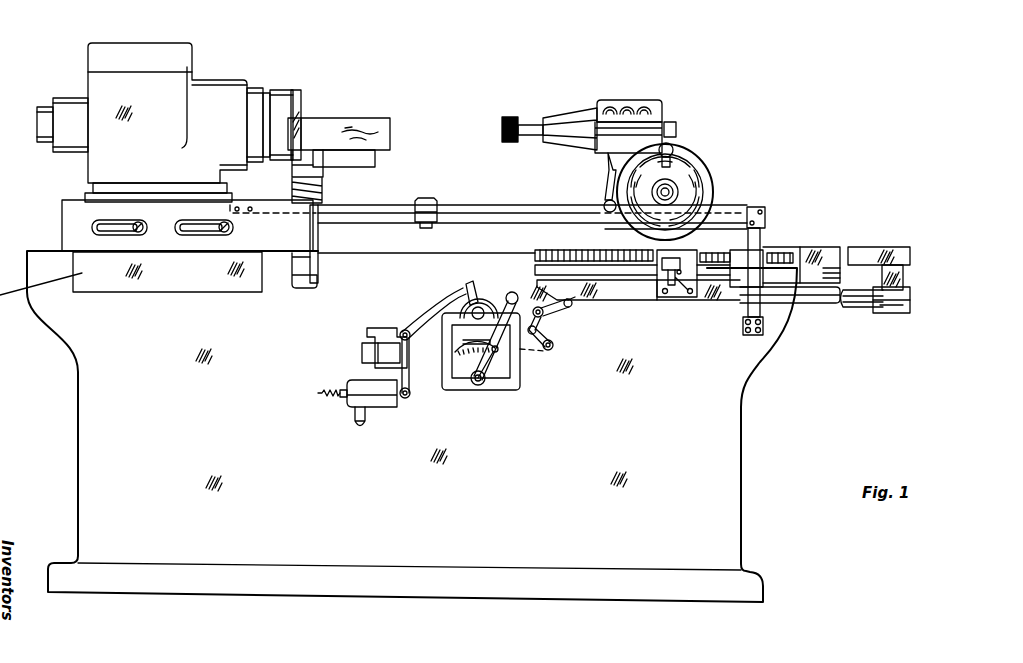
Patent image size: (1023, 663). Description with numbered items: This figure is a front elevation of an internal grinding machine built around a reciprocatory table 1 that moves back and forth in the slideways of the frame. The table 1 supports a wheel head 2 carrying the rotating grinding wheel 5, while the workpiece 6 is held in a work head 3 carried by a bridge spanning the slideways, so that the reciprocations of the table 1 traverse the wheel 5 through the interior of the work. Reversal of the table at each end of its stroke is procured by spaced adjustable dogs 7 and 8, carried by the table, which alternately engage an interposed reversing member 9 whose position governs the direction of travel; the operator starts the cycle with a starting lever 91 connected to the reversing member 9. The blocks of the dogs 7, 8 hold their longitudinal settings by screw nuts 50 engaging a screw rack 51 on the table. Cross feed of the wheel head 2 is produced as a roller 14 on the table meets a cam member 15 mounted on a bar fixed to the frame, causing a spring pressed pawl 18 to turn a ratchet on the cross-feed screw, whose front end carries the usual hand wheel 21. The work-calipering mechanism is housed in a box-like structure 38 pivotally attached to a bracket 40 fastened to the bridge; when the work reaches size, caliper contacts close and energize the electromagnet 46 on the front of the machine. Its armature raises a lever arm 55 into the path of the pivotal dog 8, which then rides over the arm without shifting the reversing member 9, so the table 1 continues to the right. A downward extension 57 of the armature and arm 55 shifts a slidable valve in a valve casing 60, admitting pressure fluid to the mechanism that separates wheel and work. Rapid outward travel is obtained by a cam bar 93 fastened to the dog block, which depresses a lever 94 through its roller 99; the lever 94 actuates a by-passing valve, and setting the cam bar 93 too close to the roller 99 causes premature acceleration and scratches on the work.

The reciprocatory table 1 is at (457, 235).
The wheel head 2 is at (643, 108).
The work head 3 is at (222, 82).
The grinding wheel 5 is at (512, 115).
The workpiece 6 is at (302, 98).
The right hand dog 7 is at (737, 282).
The pivotal dog 8 is at (685, 290).
The reversing member 9 is at (473, 284).
The roller 14 is at (604, 203).
The cam member 15 is at (428, 198).
The spring pressed pawl 18 is at (608, 177).
The hand wheel 21 is at (705, 165).
The box-like structure 38 is at (362, 123).
The bracket 40 is at (67, 223).
The electromagnet 46 is at (362, 350).
The screw nuts 50 is at (652, 250).
The screw rack 51 is at (797, 253).
The lever arm 55 is at (428, 322).
The downward extension 57 is at (408, 373).
The valve casing 60 is at (380, 407).
The starting lever 91 is at (513, 292).
The cam bar 93 is at (622, 297).
The lever 94 is at (550, 312).
The roller 99 is at (570, 306).